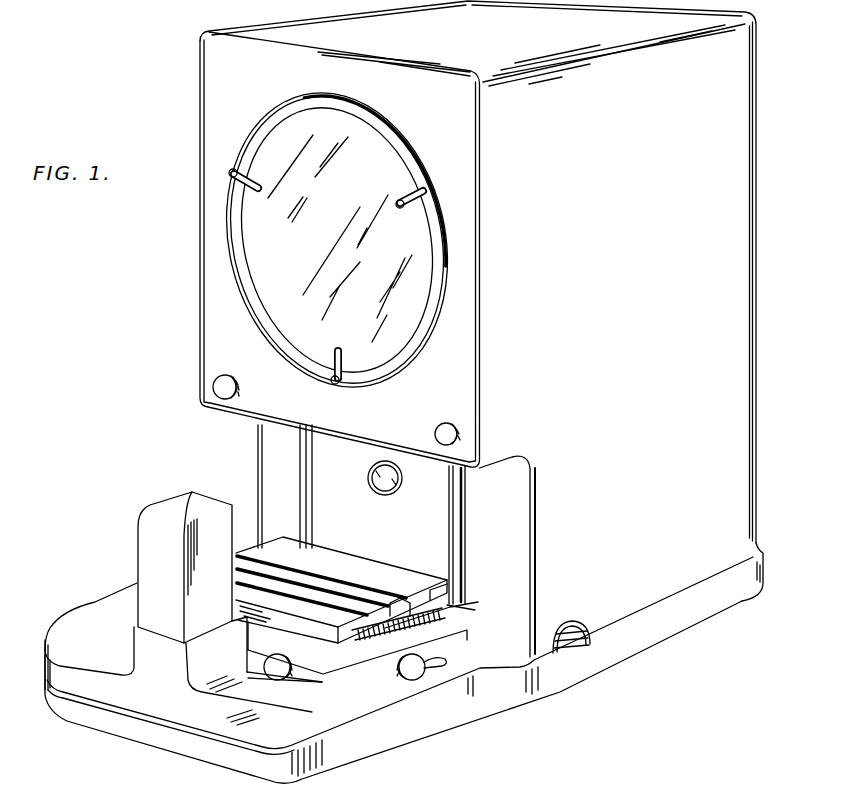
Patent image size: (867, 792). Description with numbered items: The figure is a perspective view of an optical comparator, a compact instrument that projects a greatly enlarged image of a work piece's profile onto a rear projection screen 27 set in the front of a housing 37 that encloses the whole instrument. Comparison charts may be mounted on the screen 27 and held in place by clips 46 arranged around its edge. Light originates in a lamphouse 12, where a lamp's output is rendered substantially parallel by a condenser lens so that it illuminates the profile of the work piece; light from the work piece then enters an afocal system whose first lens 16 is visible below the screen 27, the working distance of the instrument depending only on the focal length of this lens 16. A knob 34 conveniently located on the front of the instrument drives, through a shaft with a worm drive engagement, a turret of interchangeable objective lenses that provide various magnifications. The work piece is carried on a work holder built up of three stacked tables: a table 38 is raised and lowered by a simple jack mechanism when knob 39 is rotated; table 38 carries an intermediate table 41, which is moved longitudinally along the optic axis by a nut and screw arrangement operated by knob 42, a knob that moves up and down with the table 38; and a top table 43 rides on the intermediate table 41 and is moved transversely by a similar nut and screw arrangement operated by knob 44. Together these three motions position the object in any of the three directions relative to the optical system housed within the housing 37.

The lamphouse 12 is at (155, 512).
The lens 16 is at (368, 472).
The rear projection screen 27 is at (253, 231).
The knob 34 is at (446, 416).
The housing 37 is at (740, 188).
The table 38 is at (322, 653).
The knob 39 is at (417, 673).
The intermediate table 41 is at (410, 598).
The knob 42 is at (277, 673).
The top table 43 is at (423, 593).
The knob 44 is at (238, 546).
The clips 46 is at (244, 169).